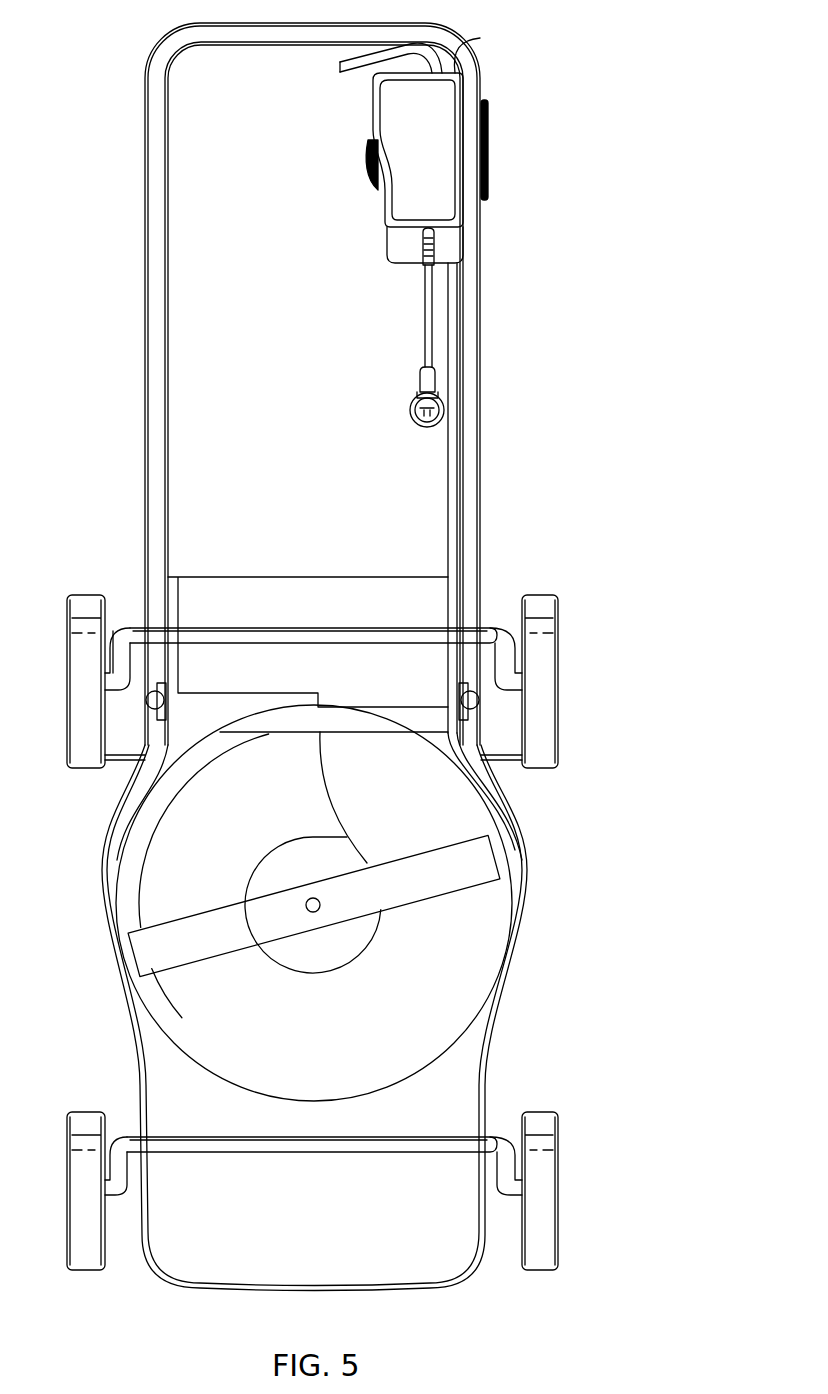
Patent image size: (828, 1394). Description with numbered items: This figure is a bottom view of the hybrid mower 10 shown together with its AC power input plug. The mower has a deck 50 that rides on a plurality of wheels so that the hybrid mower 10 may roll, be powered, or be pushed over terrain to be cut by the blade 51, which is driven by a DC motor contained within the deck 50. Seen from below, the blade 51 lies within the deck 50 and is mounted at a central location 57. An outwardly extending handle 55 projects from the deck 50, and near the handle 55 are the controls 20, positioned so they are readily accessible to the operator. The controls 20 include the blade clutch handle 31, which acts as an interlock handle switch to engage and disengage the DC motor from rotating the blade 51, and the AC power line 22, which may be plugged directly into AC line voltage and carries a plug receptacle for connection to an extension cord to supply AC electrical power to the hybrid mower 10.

The hybrid mower 10 is at (608, 424).
The controls 20 is at (365, 123).
The AC power line 22 is at (428, 307).
The blade clutch handle 31 is at (340, 67).
The deck 50 is at (508, 967).
The blade 51 is at (476, 865).
The handle 55 is at (152, 240).
The blade mounting hole 57 is at (310, 897).